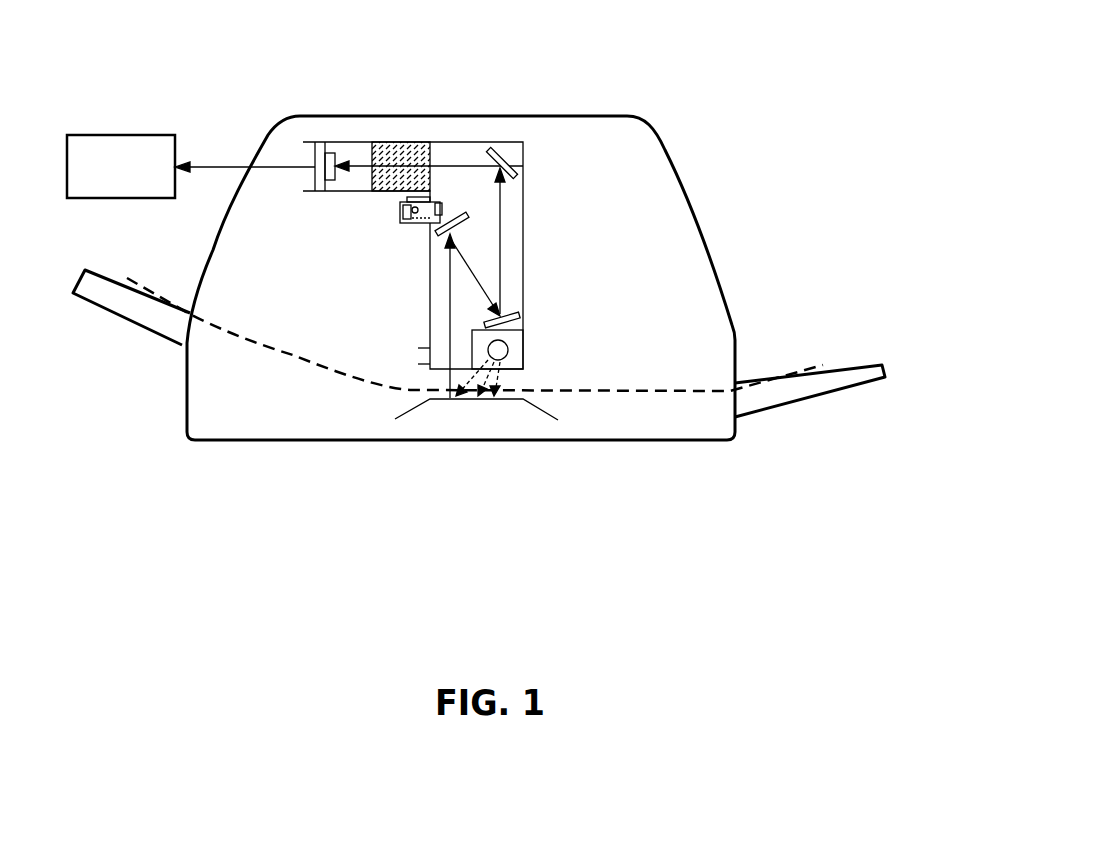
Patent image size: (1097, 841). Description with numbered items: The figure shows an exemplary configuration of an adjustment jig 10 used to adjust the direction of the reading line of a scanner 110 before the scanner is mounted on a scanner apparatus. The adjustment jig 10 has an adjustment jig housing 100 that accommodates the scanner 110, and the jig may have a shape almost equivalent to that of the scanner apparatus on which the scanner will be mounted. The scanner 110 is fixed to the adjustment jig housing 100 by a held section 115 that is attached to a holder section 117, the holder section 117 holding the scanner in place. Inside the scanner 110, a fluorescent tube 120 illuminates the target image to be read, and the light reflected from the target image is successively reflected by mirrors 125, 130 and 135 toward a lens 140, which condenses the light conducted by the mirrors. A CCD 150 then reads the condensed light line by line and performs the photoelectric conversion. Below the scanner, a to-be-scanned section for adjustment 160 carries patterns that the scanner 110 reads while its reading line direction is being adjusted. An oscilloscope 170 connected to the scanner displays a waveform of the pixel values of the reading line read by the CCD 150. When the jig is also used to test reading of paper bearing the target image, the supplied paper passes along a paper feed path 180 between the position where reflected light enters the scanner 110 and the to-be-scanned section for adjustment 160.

The adjustment jig 10 is at (726, 31).
The adjustment jig housing 100 is at (713, 257).
The scanner 110 is at (523, 235).
The held section 115 is at (403, 200).
The holder section 117 is at (400, 214).
The fluorescent tube 120 is at (509, 348).
The mirror 125 is at (436, 229).
The mirror 130 is at (520, 316).
The mirror 135 is at (515, 167).
The lens 140 is at (405, 142).
The CCD 150 is at (315, 180).
The to-be-scanned section for adjustment 160 is at (545, 407).
The oscilloscope 170 is at (123, 135).
The paper feed path 180 is at (658, 388).